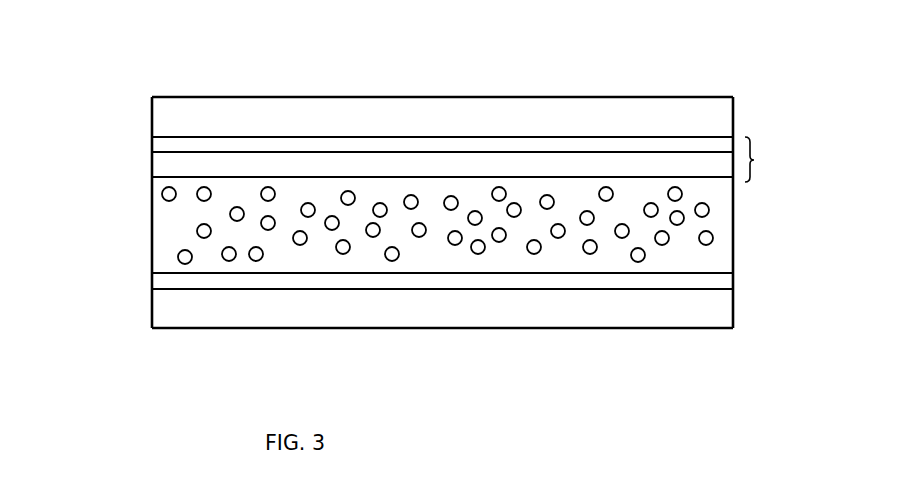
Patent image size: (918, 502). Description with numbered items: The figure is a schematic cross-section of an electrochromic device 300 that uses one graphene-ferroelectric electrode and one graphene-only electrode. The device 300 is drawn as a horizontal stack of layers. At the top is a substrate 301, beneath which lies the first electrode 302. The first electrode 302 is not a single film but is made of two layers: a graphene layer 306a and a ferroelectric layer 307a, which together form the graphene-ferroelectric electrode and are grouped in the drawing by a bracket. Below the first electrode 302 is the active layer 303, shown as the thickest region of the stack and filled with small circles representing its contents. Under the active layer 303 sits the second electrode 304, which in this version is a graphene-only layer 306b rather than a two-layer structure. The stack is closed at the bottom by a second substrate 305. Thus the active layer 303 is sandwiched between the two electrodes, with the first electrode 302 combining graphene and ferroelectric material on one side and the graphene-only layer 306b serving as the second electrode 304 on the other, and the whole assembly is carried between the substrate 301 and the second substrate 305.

The electrochromic device 300 is at (545, 69).
The substrate 301 is at (144, 109).
The first electrode 302 is at (762, 170).
The active layer 303 is at (144, 223).
The second electrode 304 is at (735, 276).
The second substrate 305 is at (144, 303).
The graphene layer 306a is at (143, 142).
The graphene-only layer 306b is at (144, 267).
The ferroelectric layer 307a is at (143, 166).